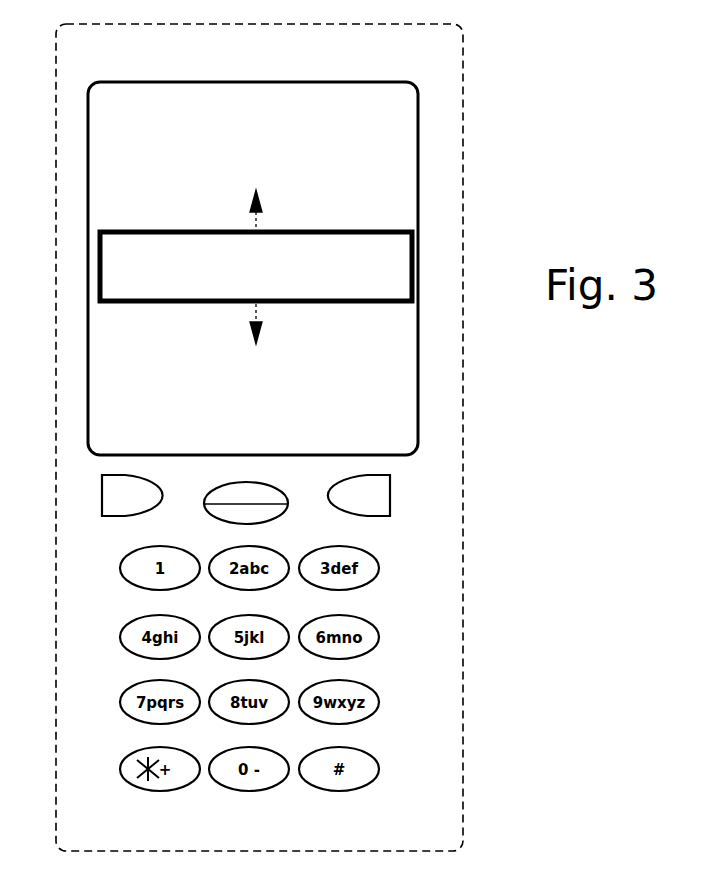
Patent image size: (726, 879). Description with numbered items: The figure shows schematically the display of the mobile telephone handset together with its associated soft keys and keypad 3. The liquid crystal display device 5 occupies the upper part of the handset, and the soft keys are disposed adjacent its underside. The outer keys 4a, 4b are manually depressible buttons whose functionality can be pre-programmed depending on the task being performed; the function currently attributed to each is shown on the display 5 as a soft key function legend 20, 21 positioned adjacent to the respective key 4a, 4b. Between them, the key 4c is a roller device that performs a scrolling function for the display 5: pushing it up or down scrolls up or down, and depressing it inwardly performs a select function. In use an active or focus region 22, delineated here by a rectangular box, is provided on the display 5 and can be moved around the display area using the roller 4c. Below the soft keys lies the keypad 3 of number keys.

The keypad 3 is at (438, 640).
The liquid crystal display device 5 is at (126, 128).
The focus region 22 is at (414, 203).
The soft key function legend 20 is at (105, 410).
The soft key function legend 21 is at (408, 410).
The soft key 4a is at (143, 508).
The soft key 4b is at (350, 495).
The roller device 4c is at (215, 507).